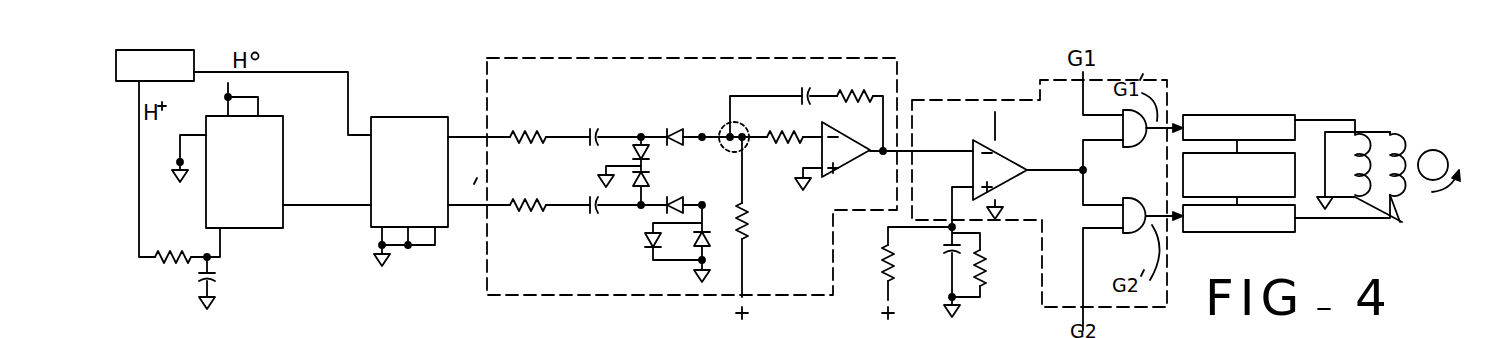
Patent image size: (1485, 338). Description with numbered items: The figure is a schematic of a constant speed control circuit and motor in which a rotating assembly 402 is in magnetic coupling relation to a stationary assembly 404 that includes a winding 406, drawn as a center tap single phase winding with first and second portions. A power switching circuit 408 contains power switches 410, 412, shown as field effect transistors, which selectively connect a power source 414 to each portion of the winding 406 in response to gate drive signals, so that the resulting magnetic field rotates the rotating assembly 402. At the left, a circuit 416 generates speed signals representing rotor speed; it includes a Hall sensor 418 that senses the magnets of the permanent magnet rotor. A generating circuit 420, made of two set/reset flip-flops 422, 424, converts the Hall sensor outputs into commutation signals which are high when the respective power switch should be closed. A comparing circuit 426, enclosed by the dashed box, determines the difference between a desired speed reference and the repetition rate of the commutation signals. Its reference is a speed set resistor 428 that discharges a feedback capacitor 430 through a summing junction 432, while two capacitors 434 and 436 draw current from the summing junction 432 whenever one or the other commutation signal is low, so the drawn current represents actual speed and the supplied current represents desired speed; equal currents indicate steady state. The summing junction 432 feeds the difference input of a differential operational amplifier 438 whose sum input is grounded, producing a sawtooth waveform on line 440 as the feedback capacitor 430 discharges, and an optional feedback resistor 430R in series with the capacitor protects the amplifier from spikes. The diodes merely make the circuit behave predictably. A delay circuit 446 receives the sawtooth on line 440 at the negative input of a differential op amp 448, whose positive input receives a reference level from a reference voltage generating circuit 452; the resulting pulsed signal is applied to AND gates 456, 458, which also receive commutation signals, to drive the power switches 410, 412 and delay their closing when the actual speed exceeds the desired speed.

The rotating assembly 402 is at (1433, 150).
The stationary assembly 404 is at (1365, 112).
The winding 406 is at (1400, 221).
The power switching circuit 408 is at (1188, 96).
The power switch 410 is at (1203, 114).
The power switch 412 is at (1222, 235).
The power source 414 is at (1183, 172).
The speed signal generating circuit 416 is at (128, 212).
The Hall sensor 418 is at (158, 82).
The generating circuit 420 is at (367, 99).
The set/reset flip-flop 422 is at (243, 229).
The set/reset flip-flop 424 is at (446, 221).
The comparing circuit 426 is at (486, 59).
The speed set resistor 428 is at (746, 206).
The feedback capacitor 430 is at (805, 105).
The feedback resistor 430R is at (843, 93).
The summing junction 432 is at (727, 124).
The capacitor 434 is at (596, 124).
The capacitor 436 is at (593, 222).
The differential operational amplifier 438 is at (848, 162).
The line 440 is at (905, 150).
The delay circuit 446 is at (933, 100).
The differential op amp 448 is at (970, 143).
The reference voltage generating circuit 452 is at (948, 281).
The AND gate 456 is at (1145, 149).
The AND gate 458 is at (1145, 235).